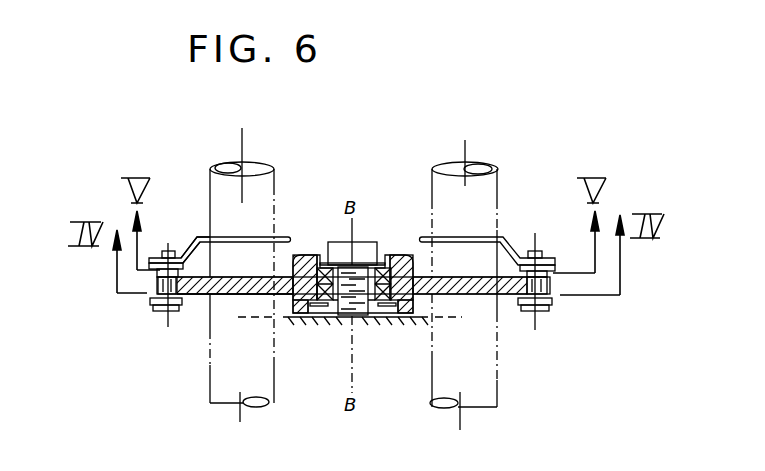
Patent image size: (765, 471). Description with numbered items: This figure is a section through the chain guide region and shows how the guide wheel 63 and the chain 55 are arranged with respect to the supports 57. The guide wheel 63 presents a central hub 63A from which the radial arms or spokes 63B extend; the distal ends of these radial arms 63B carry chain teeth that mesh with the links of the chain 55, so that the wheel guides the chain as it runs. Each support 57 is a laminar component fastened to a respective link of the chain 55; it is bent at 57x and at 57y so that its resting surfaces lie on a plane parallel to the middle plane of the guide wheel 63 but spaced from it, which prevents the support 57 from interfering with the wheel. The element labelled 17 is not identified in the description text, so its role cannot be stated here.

The cylinder 17 is at (275, 181).
The chain 55 is at (150, 309).
The support 57 is at (245, 248).
The bend of the support 57x is at (190, 236).
The bend of the support 57y is at (213, 263).
The guide wheel 63 is at (392, 344).
The hub 63A is at (300, 257).
The radial arm 63B is at (200, 294).